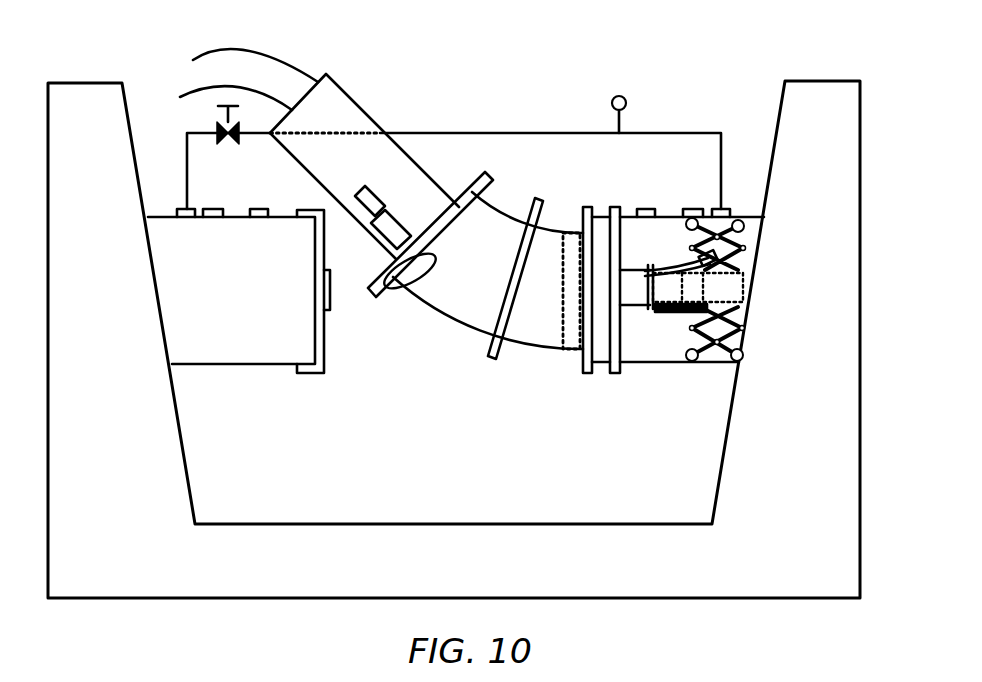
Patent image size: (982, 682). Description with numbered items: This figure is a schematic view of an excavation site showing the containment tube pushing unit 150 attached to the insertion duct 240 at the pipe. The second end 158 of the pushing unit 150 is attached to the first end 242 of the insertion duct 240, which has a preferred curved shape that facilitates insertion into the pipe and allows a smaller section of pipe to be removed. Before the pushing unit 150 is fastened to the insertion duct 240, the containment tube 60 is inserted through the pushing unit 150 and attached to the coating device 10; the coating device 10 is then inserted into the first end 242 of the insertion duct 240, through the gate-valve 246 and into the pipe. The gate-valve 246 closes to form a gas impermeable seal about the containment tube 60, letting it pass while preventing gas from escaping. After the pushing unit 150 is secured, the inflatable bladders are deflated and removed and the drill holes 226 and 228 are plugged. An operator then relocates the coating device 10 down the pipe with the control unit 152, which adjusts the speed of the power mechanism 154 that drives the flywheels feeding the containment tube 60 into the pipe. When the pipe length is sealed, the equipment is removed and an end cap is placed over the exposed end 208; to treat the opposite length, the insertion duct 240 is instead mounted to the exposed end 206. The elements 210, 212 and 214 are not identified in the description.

The coating device 10 is at (660, 311).
The containment tube 60 is at (195, 60).
The pushing unit 150 is at (378, 125).
The control unit 152 is at (360, 193).
The power mechanism 154 is at (390, 211).
The second end 158 is at (391, 276).
The exposed end 206 is at (279, 396).
The exposed end 208 is at (660, 392).
The vacuum line 210 is at (510, 130).
The vacuum line 212 is at (177, 213).
The mount 214 is at (733, 210).
The drill hole 226 is at (647, 205).
The drill hole 228 is at (700, 207).
The insertion duct 240 is at (455, 326).
The first end 242 is at (480, 172).
The gate-valve 246 is at (565, 330).